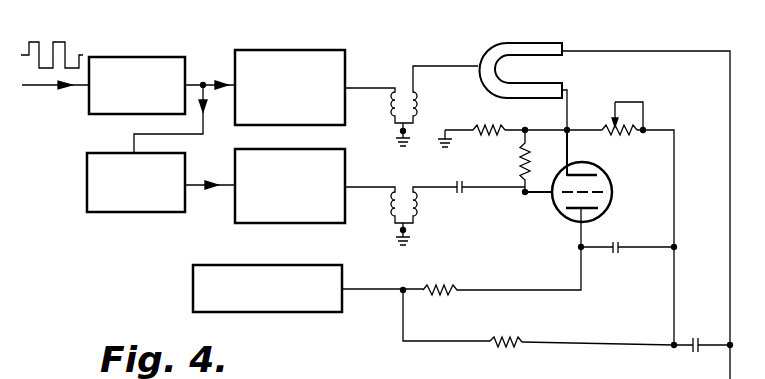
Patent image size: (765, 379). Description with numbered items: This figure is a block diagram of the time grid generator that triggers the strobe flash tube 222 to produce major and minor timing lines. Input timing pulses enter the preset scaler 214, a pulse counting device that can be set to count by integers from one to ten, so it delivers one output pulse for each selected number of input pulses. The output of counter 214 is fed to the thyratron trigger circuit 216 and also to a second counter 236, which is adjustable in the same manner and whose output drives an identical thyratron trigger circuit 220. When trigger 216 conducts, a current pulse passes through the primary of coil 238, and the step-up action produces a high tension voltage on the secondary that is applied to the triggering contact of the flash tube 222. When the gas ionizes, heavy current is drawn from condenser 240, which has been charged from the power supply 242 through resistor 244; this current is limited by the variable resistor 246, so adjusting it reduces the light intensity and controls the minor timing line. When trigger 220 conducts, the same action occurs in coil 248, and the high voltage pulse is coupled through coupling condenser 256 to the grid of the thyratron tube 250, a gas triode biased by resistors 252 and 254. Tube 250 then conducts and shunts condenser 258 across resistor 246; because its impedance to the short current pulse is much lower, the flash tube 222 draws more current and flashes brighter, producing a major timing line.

The preset scaler 214 is at (163, 56).
The thyratron trigger circuit 216 is at (326, 50).
The thyratron trigger circuit 220 is at (327, 150).
The strobe flash tube 222 is at (535, 44).
The second counter 236 is at (87, 173).
The coil 238 is at (398, 90).
The condenser 240 is at (708, 335).
The power supply 242 is at (193, 286).
The resistor 244 is at (489, 325).
The variable resistor 246 is at (607, 143).
The coil 248 is at (398, 192).
The thyratron tube 250 is at (611, 178).
The resistor 252 is at (523, 172).
The resistor 254 is at (472, 115).
The coupling condenser 256 is at (452, 196).
The condenser 258 is at (600, 252).